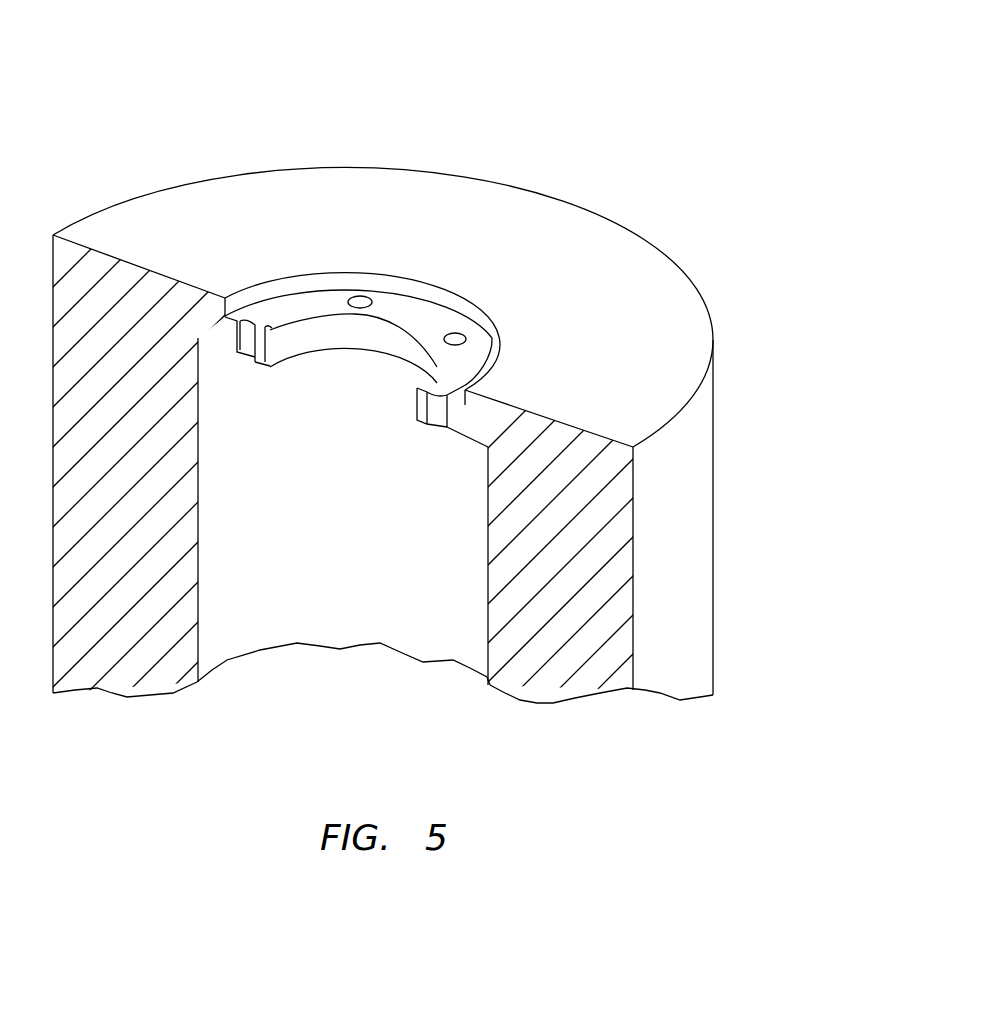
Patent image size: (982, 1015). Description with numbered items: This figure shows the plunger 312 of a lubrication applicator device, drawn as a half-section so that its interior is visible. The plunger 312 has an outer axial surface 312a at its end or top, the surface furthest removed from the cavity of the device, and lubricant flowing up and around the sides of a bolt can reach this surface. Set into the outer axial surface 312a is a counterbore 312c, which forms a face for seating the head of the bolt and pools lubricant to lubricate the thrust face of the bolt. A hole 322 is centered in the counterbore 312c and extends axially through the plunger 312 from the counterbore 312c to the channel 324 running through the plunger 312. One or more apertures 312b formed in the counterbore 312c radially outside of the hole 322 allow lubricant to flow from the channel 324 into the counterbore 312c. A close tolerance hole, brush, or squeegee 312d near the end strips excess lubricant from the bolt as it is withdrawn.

The plunger 312 is at (565, 106).
The outer axial surface 312a is at (176, 210).
The apertures 312b is at (453, 334).
The counterbore 312c is at (280, 278).
The squeegee 312d is at (306, 342).
The hole 322 is at (492, 356).
The channel 324 is at (385, 592).